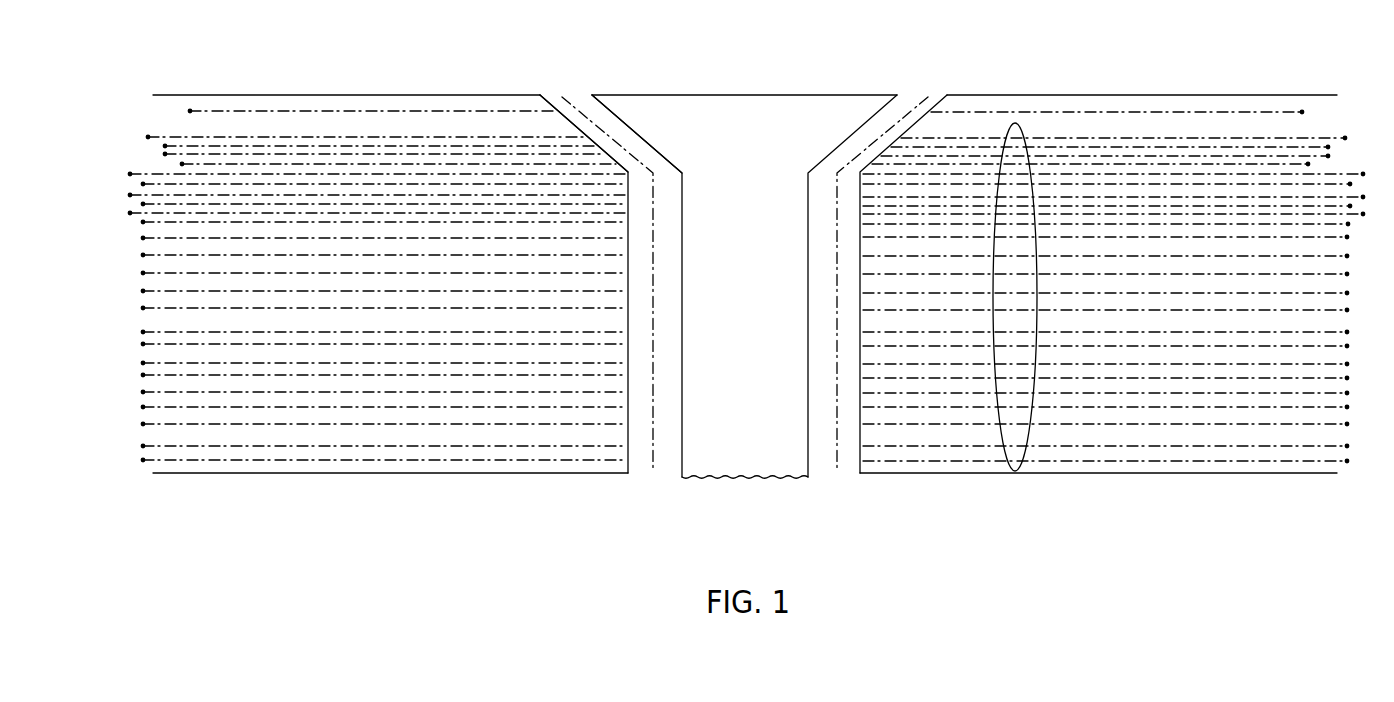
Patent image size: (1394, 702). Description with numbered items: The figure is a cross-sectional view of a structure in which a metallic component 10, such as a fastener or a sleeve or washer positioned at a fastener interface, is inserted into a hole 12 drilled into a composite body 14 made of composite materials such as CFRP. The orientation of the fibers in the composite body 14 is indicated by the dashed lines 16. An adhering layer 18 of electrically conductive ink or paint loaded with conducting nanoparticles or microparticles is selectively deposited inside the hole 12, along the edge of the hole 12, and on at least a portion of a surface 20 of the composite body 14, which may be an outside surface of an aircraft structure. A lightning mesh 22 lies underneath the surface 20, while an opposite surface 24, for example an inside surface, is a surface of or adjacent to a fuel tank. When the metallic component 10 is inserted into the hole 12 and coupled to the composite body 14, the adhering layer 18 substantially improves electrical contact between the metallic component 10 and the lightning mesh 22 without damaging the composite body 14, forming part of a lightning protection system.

The metallic component 10 is at (840, 92).
The hole 12 is at (582, 98).
The composite body 14 is at (1132, 476).
The dashed lines 16 is at (1015, 472).
The adhering layer 18 is at (332, 95).
The surface 20 is at (424, 92).
The lightning mesh 22 is at (1114, 110).
The opposite surface 24 is at (420, 476).